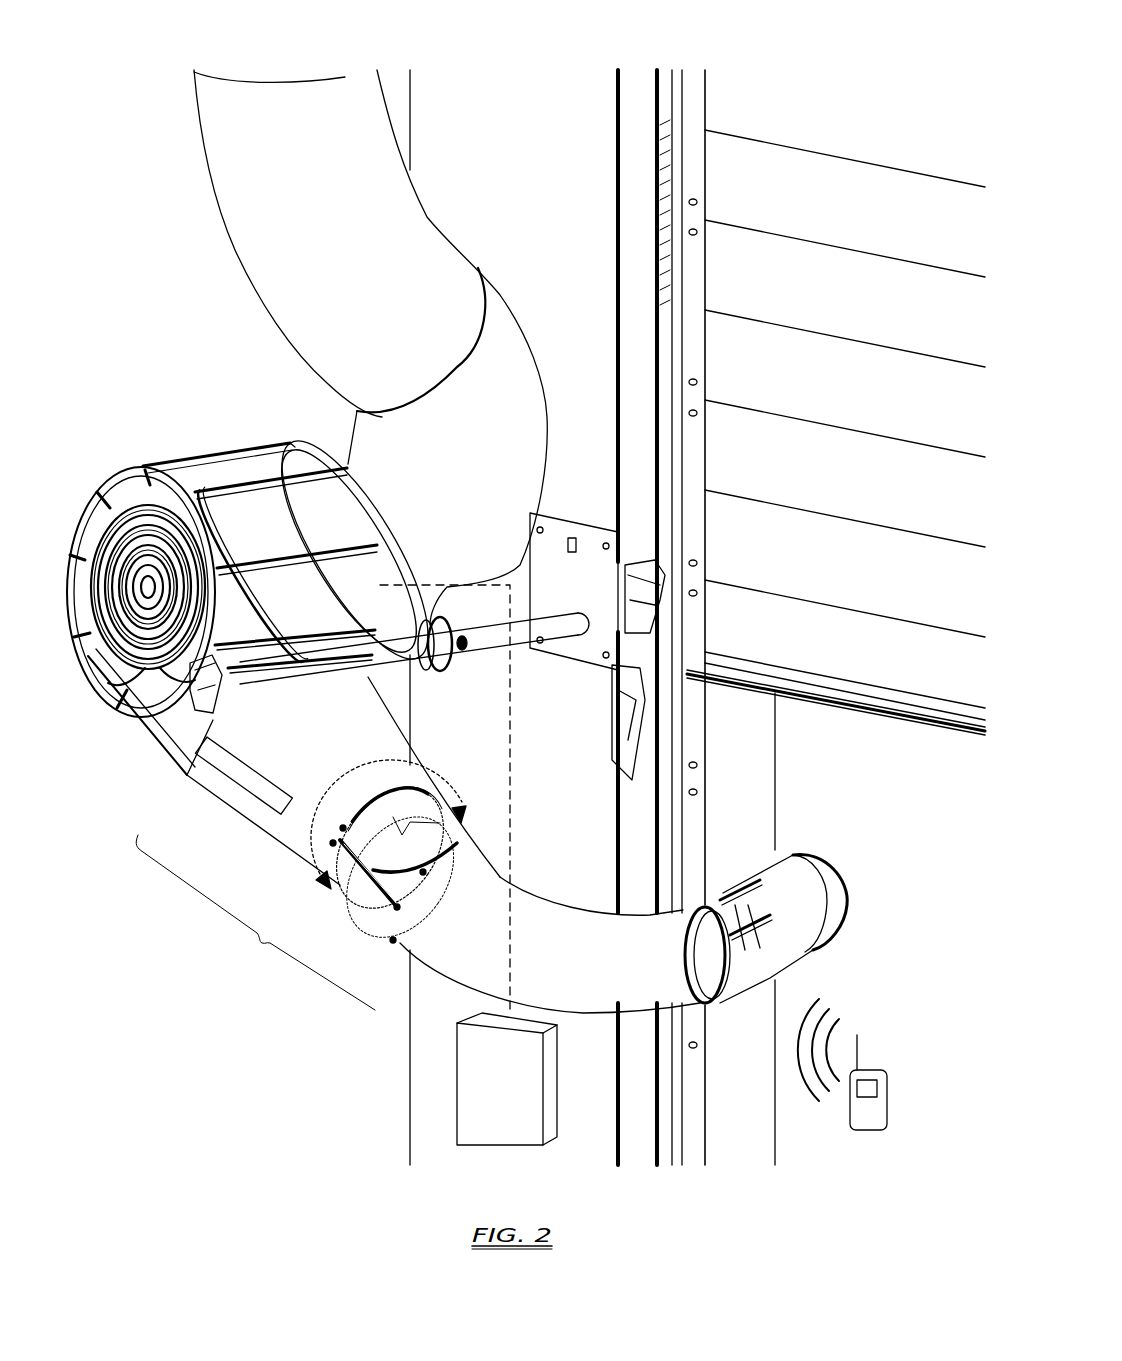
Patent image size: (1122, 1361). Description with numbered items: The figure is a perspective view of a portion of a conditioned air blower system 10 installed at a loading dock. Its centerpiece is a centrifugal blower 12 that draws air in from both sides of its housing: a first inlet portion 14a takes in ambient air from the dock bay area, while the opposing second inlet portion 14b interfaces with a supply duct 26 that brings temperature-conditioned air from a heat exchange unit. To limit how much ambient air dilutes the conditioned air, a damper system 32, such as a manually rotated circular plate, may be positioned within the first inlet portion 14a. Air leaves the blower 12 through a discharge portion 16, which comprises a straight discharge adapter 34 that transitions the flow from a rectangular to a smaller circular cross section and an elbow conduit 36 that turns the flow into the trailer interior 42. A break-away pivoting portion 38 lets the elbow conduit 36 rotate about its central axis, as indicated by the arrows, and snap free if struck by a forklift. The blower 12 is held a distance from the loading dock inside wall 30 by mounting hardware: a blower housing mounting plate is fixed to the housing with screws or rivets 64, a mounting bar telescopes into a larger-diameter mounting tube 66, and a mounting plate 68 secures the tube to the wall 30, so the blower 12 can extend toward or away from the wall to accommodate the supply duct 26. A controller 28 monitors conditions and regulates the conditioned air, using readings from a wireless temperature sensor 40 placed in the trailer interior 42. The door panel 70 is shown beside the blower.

The conditioned air blower system 10 is at (157, 340).
The centrifugal blower 12 is at (238, 447).
The first inlet portion 14a is at (136, 462).
The second inlet portion 14b is at (415, 518).
The discharge portion 16 is at (255, 922).
The supply duct 26 is at (235, 197).
The controller 28 is at (513, 1097).
The loading dock inside wall 30 is at (538, 183).
The damper system 32 is at (141, 563).
The straight discharge adapter 34 is at (343, 744).
The elbow conduit 36 is at (540, 952).
The break-away pivoting portion 38 is at (338, 893).
The wireless temperature sensor 40 is at (887, 1082).
The trailer interior 42 is at (910, 812).
The screws or rivets 64 is at (197, 698).
The mounting tube 66 is at (493, 650).
The mounting plate 68 is at (552, 658).
The door panel 70 is at (853, 392).